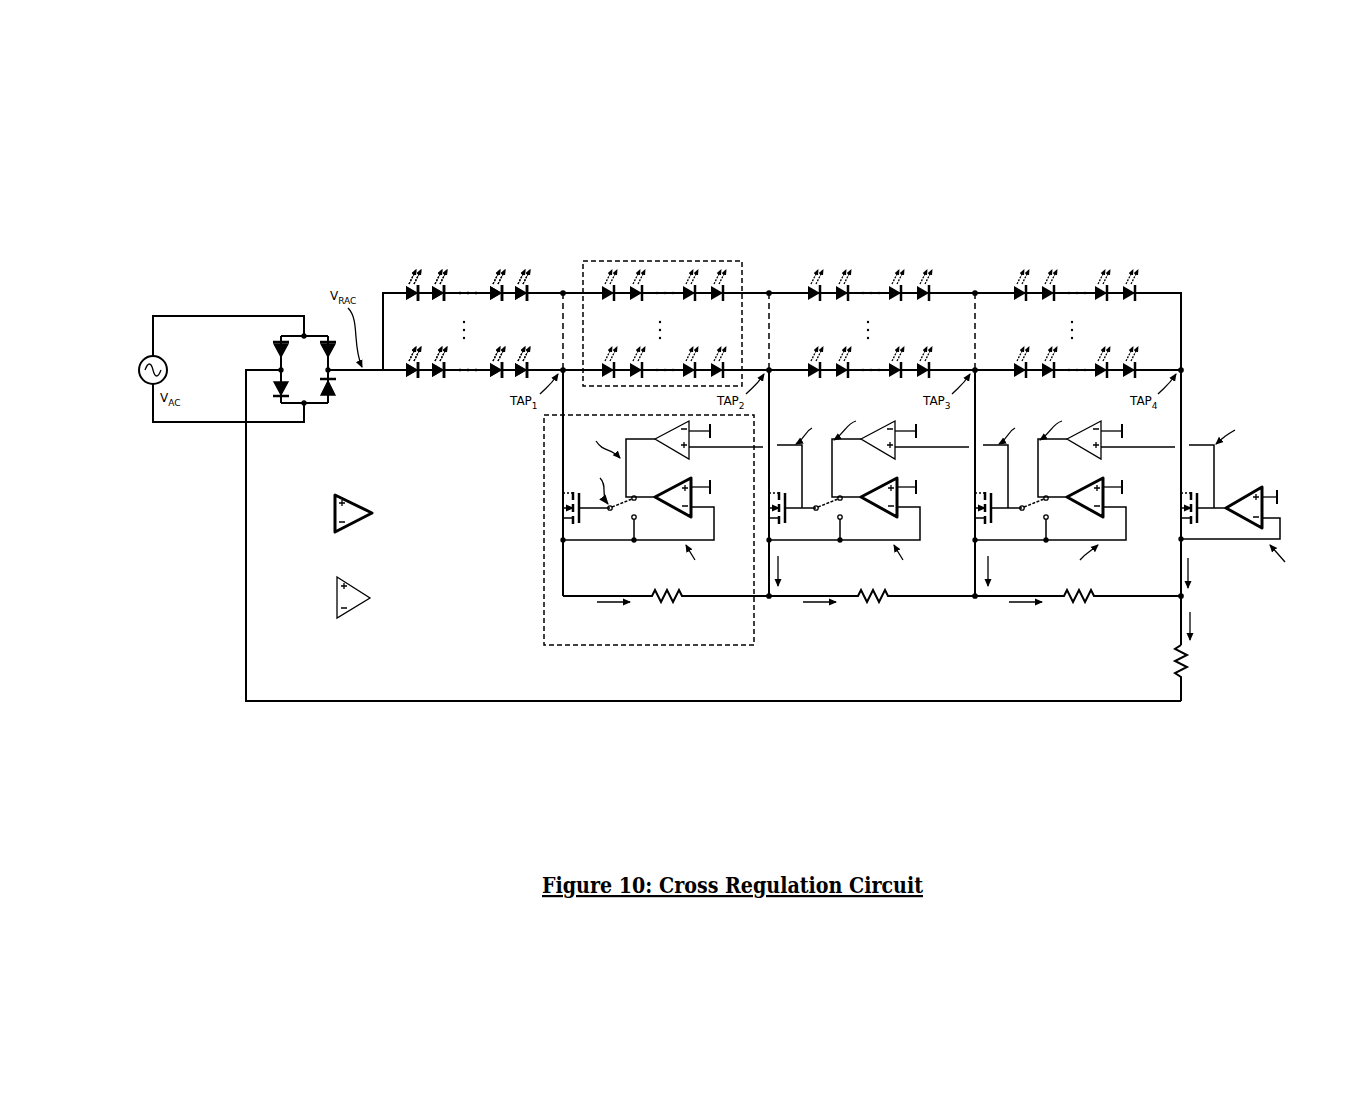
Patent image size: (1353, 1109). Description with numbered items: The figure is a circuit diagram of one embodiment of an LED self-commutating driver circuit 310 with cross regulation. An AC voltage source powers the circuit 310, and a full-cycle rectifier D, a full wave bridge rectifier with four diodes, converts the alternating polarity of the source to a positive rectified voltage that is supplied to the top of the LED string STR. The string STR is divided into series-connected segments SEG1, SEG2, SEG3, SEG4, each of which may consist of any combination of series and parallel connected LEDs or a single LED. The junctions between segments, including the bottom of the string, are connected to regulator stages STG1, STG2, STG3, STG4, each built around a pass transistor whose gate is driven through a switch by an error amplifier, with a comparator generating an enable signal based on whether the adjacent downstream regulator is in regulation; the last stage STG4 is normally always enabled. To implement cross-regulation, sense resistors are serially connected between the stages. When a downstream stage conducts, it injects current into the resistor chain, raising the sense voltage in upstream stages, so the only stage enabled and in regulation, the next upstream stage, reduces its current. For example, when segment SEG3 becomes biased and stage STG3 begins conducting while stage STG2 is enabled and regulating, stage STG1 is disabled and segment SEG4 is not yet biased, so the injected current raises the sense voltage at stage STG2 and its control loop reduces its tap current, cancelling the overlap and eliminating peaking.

The driver circuit 310 is at (430, 556).
The full-cycle rectifier D is at (339, 398).
The LED string STR is at (393, 262).
The first segment SEG1 is at (480, 250).
The second segment SEG2 is at (688, 252).
The third segment SEG3 is at (894, 252).
The fourth segment SEG4 is at (1098, 252).
The stage 1 STG1 is at (670, 652).
The stage 2 STG2 is at (886, 652).
The stage 3 STG3 is at (1114, 652).
The stage 4 STG4 is at (1250, 563).